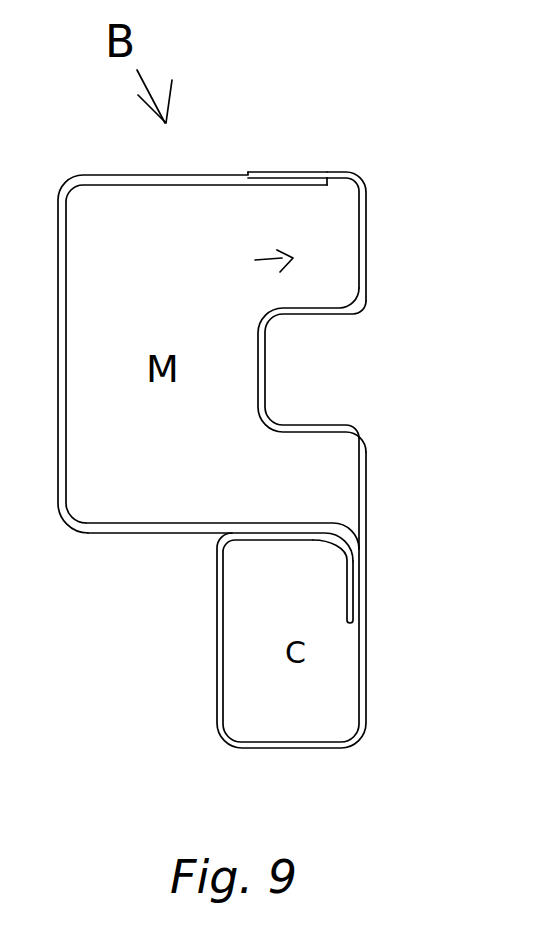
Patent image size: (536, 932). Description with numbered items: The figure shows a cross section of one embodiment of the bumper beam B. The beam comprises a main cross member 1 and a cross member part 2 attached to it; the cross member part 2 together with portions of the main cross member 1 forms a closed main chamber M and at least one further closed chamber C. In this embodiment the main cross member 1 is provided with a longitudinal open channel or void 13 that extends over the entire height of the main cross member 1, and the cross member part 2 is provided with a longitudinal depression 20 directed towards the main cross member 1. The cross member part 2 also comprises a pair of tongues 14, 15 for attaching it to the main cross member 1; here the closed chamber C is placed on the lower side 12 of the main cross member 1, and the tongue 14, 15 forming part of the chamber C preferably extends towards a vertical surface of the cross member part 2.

The main cross member 1 is at (92, 535).
The cross member part 2 is at (368, 267).
The lower side 12 is at (173, 532).
The longitudinal open channel or void 13 is at (255, 263).
The tongue 14 is at (300, 170).
The tongue 15 is at (348, 559).
The longitudinal depression 20 is at (270, 372).